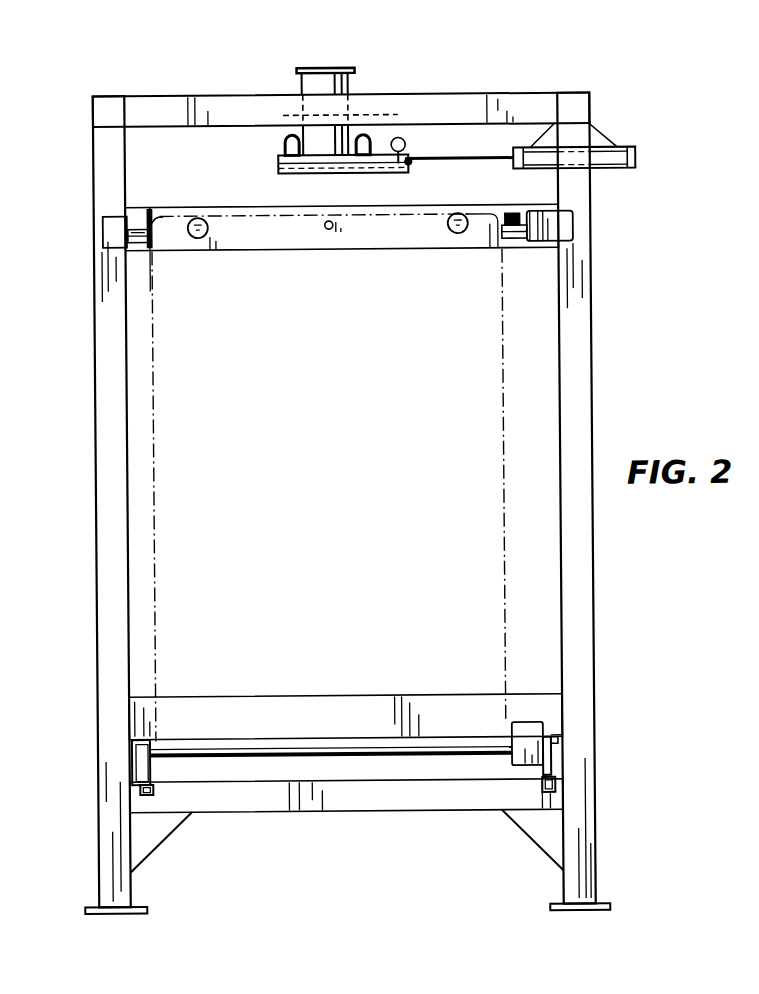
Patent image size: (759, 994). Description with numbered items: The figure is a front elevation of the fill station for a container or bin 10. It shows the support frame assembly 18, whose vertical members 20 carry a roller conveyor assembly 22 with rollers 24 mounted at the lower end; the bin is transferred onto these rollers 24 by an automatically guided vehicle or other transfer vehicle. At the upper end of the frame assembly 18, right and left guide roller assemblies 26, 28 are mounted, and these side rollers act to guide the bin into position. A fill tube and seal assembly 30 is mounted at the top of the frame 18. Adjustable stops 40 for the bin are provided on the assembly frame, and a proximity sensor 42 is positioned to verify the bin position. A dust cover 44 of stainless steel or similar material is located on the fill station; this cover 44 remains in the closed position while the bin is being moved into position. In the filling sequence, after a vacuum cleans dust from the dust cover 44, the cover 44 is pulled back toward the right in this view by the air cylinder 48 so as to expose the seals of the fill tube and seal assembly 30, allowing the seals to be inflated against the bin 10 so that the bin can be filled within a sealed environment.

The container or bin 10 is at (479, 351).
The support frame assembly 18 is at (561, 82).
The vertical members 20 is at (119, 353).
The roller conveyor assembly 22 is at (509, 718).
The rollers 24 is at (303, 745).
The right guide roller assembly 26 is at (517, 245).
The left guide roller assembly 28 is at (144, 252).
The fill tube and seal assembly 30 is at (303, 88).
The adjustable stops 40 is at (202, 237).
The proximity sensor 42 is at (331, 229).
The dust cover 44 is at (415, 166).
The air cylinder 48 is at (643, 160).